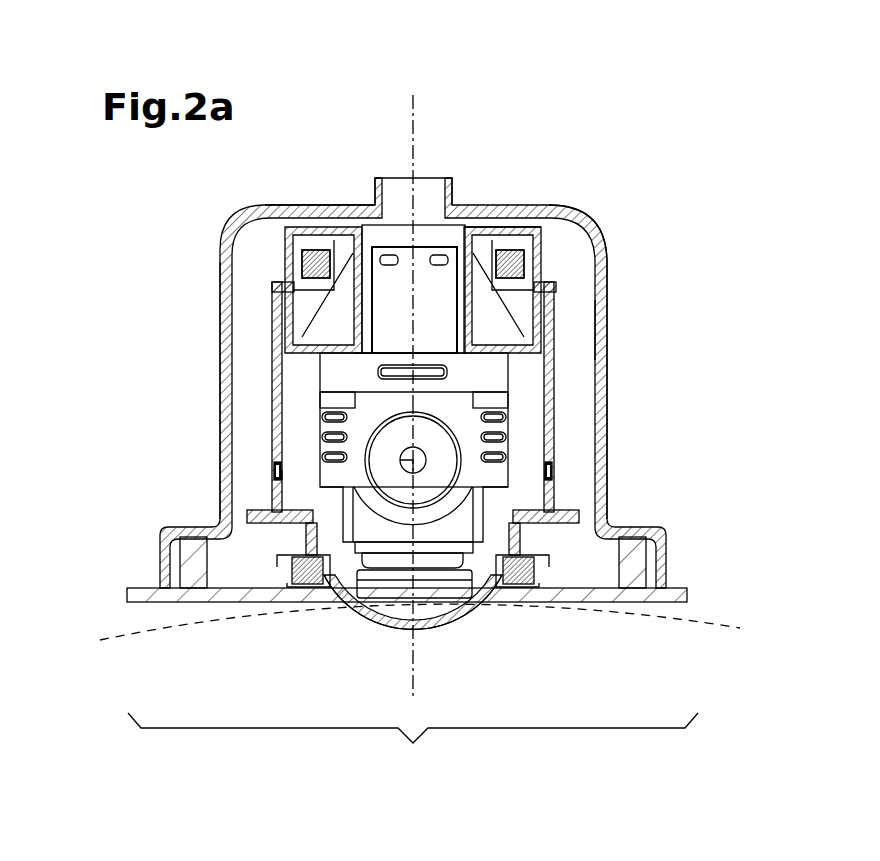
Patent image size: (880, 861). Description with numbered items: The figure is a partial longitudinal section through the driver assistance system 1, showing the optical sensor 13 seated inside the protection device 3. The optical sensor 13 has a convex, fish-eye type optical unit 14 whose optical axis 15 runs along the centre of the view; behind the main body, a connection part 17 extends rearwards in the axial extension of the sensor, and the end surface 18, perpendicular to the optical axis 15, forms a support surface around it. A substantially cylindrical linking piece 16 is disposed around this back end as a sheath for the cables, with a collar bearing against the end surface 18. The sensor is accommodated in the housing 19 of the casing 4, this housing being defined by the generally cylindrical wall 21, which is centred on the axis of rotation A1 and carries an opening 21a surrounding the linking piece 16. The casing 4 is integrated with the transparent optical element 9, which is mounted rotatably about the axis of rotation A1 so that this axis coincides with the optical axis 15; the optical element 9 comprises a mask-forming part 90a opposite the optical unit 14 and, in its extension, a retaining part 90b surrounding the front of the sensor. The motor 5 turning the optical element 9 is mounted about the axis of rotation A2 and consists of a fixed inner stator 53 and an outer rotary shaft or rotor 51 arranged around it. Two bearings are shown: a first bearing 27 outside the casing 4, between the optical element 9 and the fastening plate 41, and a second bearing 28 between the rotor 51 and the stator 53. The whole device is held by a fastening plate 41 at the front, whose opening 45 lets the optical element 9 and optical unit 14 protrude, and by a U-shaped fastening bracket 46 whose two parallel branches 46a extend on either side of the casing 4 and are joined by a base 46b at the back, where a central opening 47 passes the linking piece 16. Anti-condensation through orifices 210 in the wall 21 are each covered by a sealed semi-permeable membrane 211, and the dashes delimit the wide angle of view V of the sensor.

The driver assistance system 1 is at (624, 70).
The protection device 3 is at (161, 216).
The casing 4 is at (268, 374).
The motor 5 is at (544, 210).
The optical element 9 is at (473, 610).
The optical sensor 13 is at (515, 422).
The optical unit 14 is at (375, 620).
The optical axis 15 is at (430, 478).
The linking piece 16 is at (330, 243).
The connection part 17 is at (422, 253).
The end surface 18 is at (367, 350).
The housing 19 is at (311, 441).
The wall 21 is at (565, 362).
The opening 21a is at (470, 226).
The first bearing 27 is at (300, 567).
The second bearing 28 is at (300, 266).
The fastening plate 41 is at (617, 603).
The opening 45 is at (341, 592).
The fastening bracket 46 is at (608, 364).
The branches 46a is at (218, 417).
The base 46b is at (343, 206).
The opening 47 is at (445, 193).
The rotary shaft 51 is at (300, 318).
The stator 53 is at (557, 362).
The mask-forming part 90a is at (450, 620).
The retaining part 90b is at (256, 533).
The through orifice 210 is at (275, 477).
The semi-permeable membrane 211 is at (273, 463).
The axis of rotation A1 is at (415, 657).
The axis of rotation A2 is at (413, 117).
The angle of view V is at (413, 748).